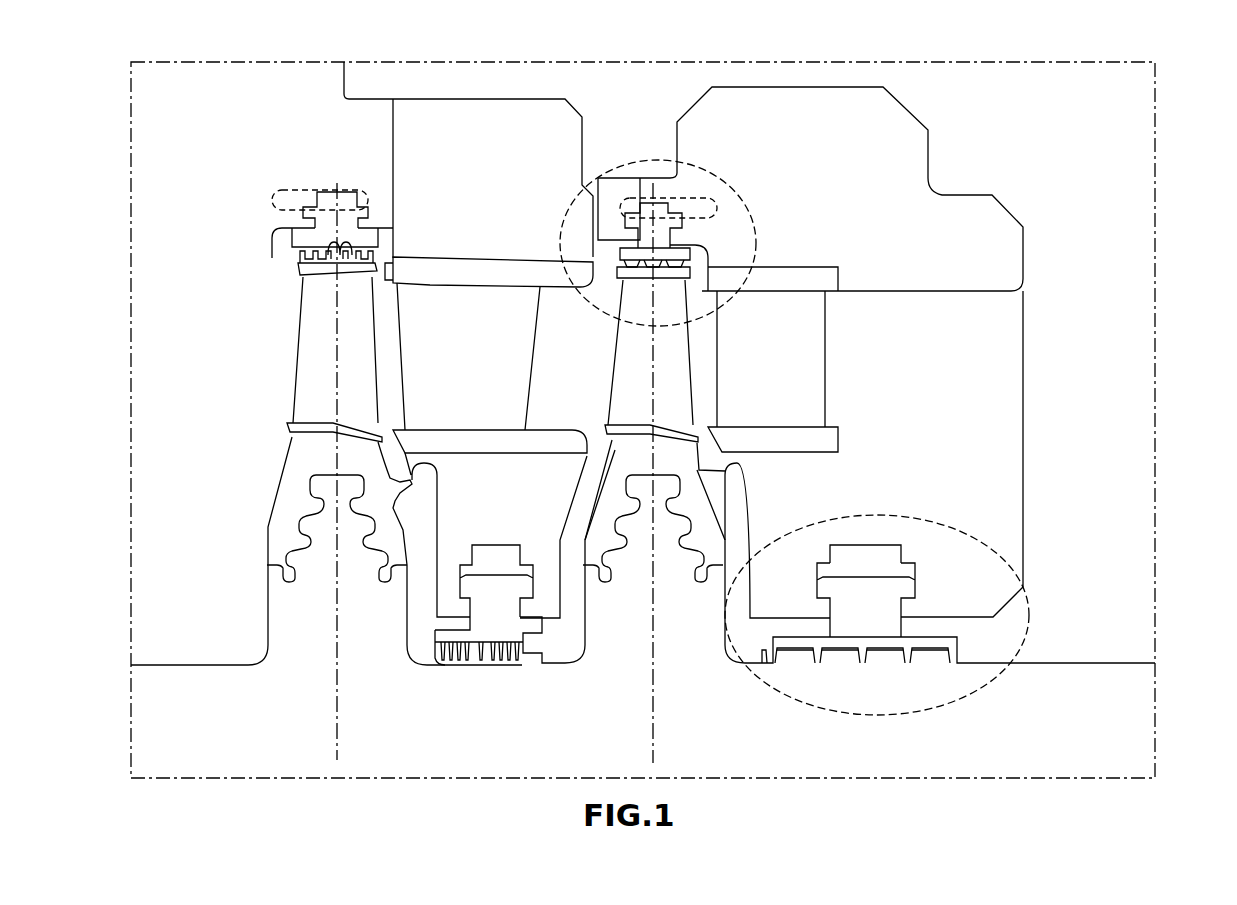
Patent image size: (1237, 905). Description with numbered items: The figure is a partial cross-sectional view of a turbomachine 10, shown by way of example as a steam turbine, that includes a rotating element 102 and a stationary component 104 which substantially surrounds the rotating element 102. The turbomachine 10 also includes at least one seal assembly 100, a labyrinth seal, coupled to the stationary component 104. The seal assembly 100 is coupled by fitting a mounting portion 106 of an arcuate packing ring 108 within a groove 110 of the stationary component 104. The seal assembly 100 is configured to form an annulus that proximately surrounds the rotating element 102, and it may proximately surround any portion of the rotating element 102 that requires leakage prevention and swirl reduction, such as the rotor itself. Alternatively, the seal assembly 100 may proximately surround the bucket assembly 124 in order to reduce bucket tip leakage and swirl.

The turbomachine 10 is at (1088, 345).
The seal assembly 100 is at (557, 219).
The rotating element 102 is at (1102, 742).
The stationary component 104 is at (785, 100).
The mounting portion 106 is at (643, 232).
The arcuate packing ring 108 is at (640, 247).
The groove 110 is at (665, 208).
The bucket assembly 124 is at (663, 352).